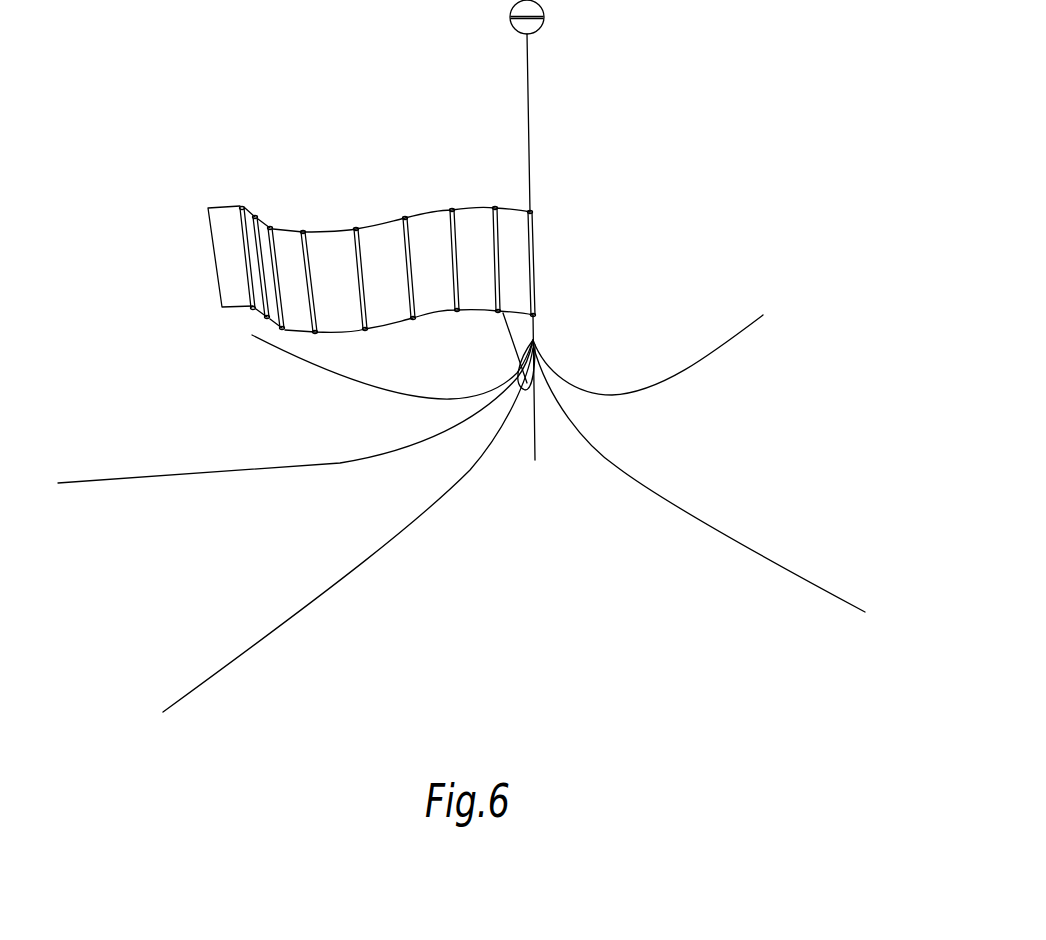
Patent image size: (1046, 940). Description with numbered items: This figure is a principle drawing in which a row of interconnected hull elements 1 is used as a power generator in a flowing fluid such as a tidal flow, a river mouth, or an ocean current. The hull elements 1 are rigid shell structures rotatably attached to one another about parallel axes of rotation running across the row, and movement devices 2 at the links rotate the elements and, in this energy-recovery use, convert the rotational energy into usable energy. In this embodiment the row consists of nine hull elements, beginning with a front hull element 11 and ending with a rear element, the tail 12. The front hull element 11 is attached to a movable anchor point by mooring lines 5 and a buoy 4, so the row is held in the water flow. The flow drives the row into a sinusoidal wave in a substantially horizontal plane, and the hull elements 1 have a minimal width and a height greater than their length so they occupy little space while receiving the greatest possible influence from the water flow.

The hull elements 1 is at (387, 298).
The movement devices 2 is at (315, 260).
The buoy 4 is at (546, 20).
The mooring lines 5 is at (170, 472).
The front hull element 11 is at (513, 258).
The tail 12 is at (225, 258).